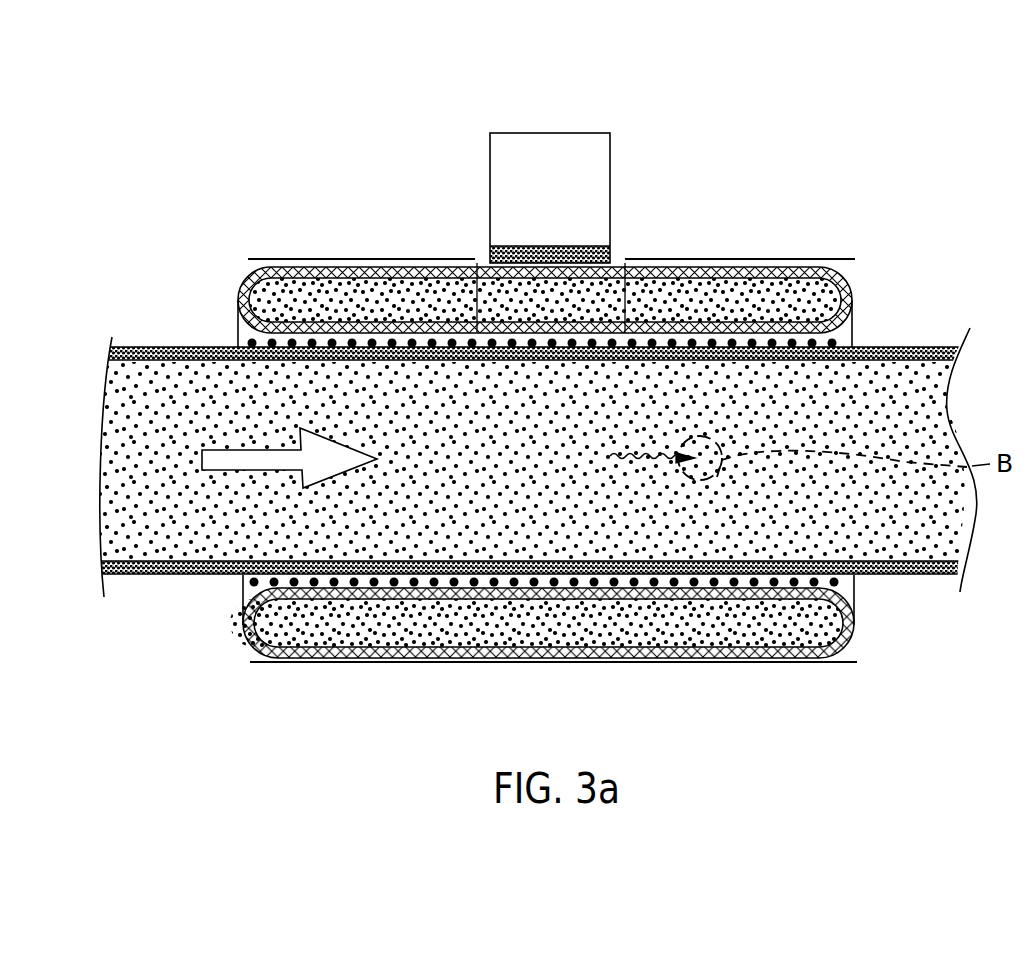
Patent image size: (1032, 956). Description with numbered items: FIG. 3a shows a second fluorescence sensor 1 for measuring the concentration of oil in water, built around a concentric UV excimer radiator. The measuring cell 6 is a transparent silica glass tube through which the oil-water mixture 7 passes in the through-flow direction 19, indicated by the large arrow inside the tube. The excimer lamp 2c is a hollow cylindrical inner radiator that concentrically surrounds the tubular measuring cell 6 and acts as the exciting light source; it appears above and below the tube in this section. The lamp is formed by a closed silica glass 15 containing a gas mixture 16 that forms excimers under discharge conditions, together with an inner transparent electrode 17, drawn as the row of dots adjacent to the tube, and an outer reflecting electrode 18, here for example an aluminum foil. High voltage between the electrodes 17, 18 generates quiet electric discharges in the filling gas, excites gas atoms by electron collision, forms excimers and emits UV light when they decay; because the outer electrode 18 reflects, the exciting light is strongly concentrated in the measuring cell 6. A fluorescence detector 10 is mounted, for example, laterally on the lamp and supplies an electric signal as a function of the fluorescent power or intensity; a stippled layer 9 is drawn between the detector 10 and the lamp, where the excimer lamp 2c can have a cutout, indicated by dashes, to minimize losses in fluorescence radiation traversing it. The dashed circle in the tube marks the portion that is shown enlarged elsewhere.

The fluorescence sensor 1 is at (407, 186).
The excimer lamp 2c is at (519, 477).
The measuring cell 6 is at (895, 572).
The oil-water mixture 7 is at (150, 545).
The sensor layer 9 is at (607, 256).
The fluorescence detector 10 is at (550, 198).
The closed silica glass 15 is at (415, 648).
The gas mixture 16 is at (580, 622).
The inner transparent electrode 17 is at (620, 583).
The outer reflecting electrode 18 is at (842, 258).
The through-flow direction 19 is at (289, 450).